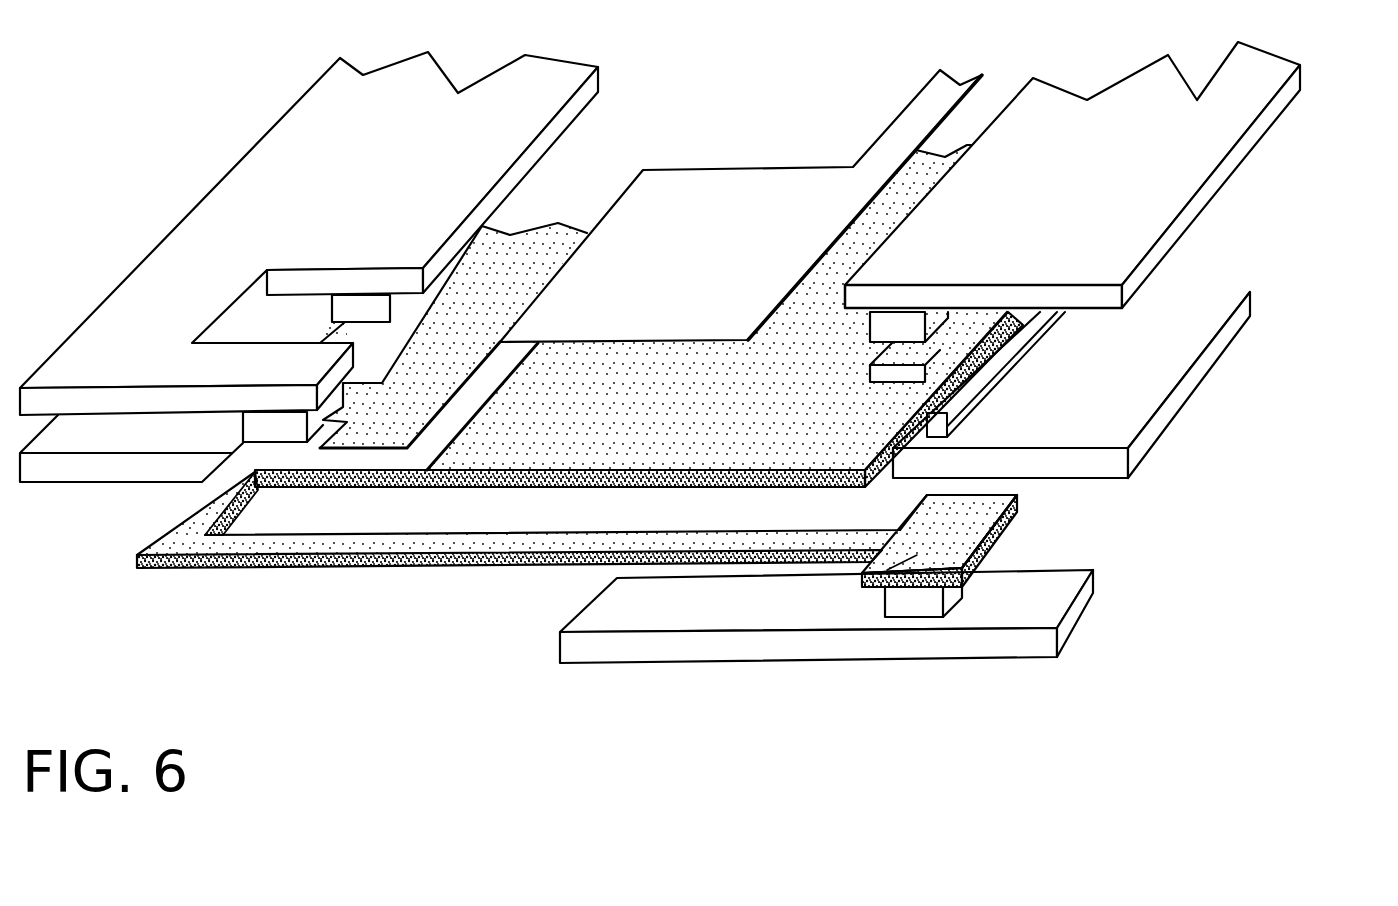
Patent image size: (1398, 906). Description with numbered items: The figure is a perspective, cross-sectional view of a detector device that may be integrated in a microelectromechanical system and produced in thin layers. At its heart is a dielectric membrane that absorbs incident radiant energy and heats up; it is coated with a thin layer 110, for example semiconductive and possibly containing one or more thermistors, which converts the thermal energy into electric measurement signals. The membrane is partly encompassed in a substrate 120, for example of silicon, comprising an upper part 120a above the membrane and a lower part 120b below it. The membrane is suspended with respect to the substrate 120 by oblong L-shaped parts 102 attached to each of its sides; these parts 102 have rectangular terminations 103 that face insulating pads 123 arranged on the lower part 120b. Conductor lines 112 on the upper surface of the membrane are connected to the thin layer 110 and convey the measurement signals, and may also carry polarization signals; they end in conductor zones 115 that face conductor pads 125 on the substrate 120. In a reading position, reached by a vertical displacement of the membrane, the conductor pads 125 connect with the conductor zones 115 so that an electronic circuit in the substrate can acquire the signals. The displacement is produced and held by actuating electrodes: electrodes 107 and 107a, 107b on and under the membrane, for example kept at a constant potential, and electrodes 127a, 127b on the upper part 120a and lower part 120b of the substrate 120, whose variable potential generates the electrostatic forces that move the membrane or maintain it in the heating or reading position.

The oblong L-shaped parts 102 is at (415, 568).
The terminations 103 is at (862, 585).
The spacer block (left) 107 is at (412, 320).
The actuating electrode 107a is at (928, 345).
The actuating electrode 107b is at (950, 403).
The thin layer 110 is at (717, 185).
The conductor lines 112 is at (380, 458).
The conductor zones 115 is at (262, 453).
The substrate 120 is at (1300, 352).
The upper part of substrate 120a is at (1172, 230).
The lower part of substrate 120b is at (1070, 580).
The insulating pads 123 is at (918, 603).
The conductor pads 125 is at (260, 425).
The actuating electrode 127a is at (357, 307).
The actuating electrode 127b is at (1010, 362).